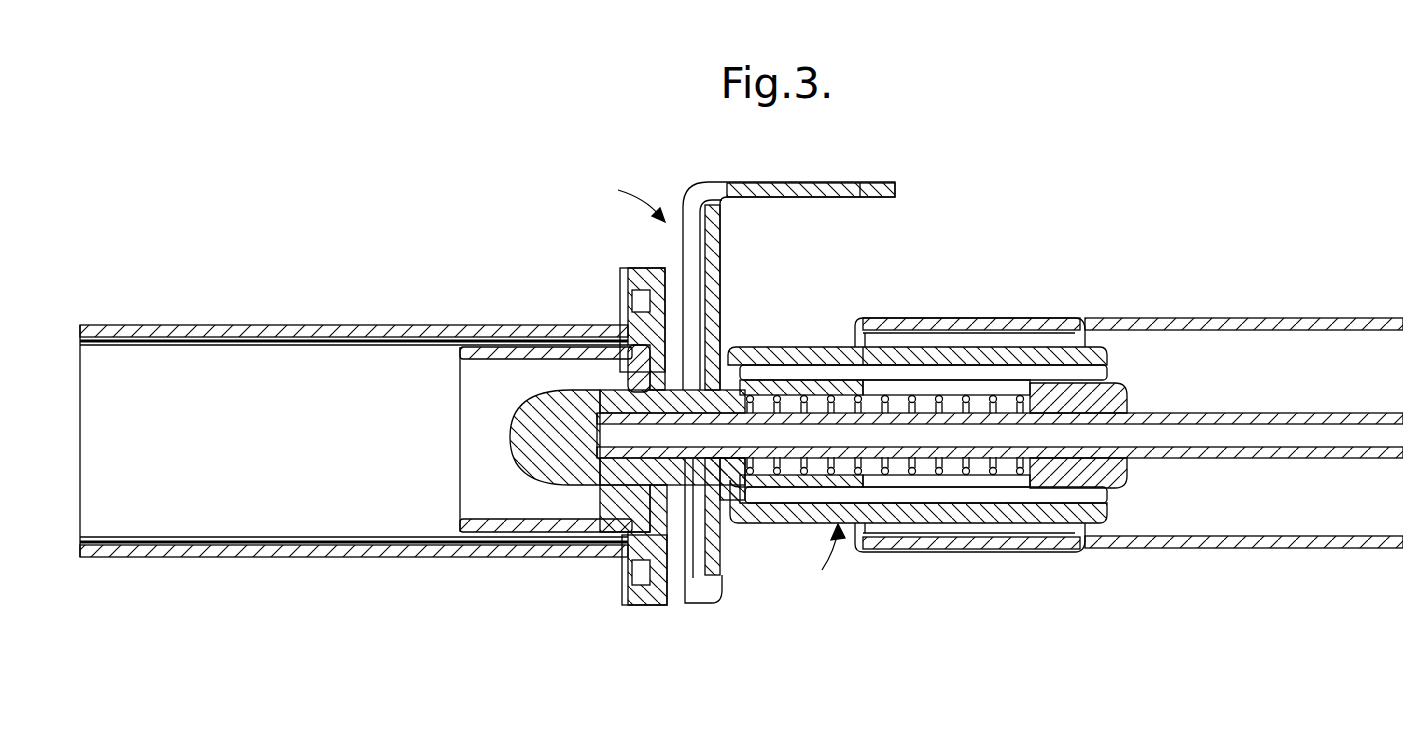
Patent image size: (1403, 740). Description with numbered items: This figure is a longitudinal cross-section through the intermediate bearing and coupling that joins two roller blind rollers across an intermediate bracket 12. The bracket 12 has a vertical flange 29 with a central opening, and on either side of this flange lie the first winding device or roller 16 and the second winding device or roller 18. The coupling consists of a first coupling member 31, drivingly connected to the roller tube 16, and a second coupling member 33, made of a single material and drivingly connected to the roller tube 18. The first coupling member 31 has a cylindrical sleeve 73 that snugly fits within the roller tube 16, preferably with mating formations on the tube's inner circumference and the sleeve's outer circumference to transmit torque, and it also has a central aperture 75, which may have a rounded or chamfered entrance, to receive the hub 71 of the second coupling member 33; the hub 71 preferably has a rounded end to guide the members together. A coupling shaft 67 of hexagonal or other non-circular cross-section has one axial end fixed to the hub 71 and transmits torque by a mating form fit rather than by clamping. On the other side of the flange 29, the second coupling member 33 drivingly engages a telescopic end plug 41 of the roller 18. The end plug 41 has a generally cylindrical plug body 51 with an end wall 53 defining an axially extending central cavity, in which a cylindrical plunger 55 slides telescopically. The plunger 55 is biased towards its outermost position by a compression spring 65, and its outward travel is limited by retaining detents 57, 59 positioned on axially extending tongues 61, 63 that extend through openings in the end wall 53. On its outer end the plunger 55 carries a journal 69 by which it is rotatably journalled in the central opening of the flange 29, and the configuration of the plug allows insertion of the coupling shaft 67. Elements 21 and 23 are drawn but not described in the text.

The bracket 12 is at (627, 199).
The first winding device or roller 16 is at (279, 548).
The second winding device or roller 18 is at (1293, 542).
The upper mounting plate 21 is at (810, 184).
The horizontal flange of plate 23 is at (860, 181).
The vertical flange 29 is at (700, 604).
The first coupling member 31 is at (632, 572).
The second coupling member 33 is at (661, 603).
The end plug 41 is at (918, 535).
The plug body 51 is at (1060, 340).
The end wall 53 is at (1122, 391).
The plunger 55 is at (808, 356).
The retaining detent 57 is at (1100, 325).
The retaining detent 59 is at (1085, 540).
The axially extending tongue 61 is at (1005, 355).
The axially extending tongue 63 is at (1000, 524).
The compression spring 65 is at (915, 472).
The coupling shaft 67 is at (1378, 449).
The journal 69 is at (727, 507).
The hub 71 is at (510, 457).
The cylindrical sleeve 73 is at (475, 357).
The central aperture 75 is at (603, 385).